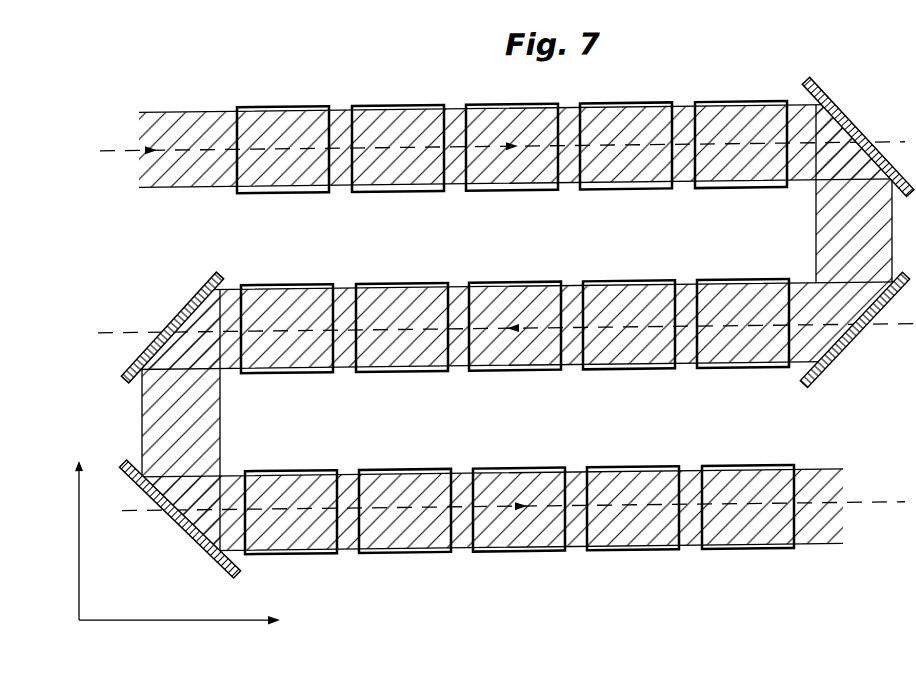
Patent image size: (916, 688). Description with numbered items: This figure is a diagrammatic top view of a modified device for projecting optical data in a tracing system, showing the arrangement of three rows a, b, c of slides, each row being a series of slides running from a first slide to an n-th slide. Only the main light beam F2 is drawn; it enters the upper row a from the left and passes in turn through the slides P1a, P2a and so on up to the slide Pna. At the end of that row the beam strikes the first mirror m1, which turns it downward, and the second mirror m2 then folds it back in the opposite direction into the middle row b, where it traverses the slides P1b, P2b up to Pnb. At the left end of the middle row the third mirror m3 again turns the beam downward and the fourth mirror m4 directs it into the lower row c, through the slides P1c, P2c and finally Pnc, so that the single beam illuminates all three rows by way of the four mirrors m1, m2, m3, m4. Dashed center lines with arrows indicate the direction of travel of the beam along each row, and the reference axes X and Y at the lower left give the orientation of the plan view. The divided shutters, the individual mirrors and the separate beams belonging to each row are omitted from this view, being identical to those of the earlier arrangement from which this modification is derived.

The main light beam F2 is at (518, 146).
The first row of slides a is at (493, 146).
The second row of slides b is at (507, 328).
The third row of slides c is at (501, 506).
The first mirror m1 is at (858, 136).
The second mirror m2 is at (857, 329).
The third mirror m3 is at (172, 327).
The fourth mirror m4 is at (179, 519).
The first slide of row a P1a is at (283, 165).
The second slide of row a P2a is at (398, 165).
The n-th slide of row a Pna is at (741, 160).
The first slide of row b P1b is at (287, 344).
The second slide of row b P2b is at (402, 344).
The n-th slide of row b Pnb is at (743, 339).
The first slide of row c P1c is at (291, 527).
The second slide of row c P2c is at (405, 527).
The n-th slide of row c Pnc is at (748, 522).
The X coordinate axis X is at (190, 623).
The Y coordinate axis Y is at (66, 539).